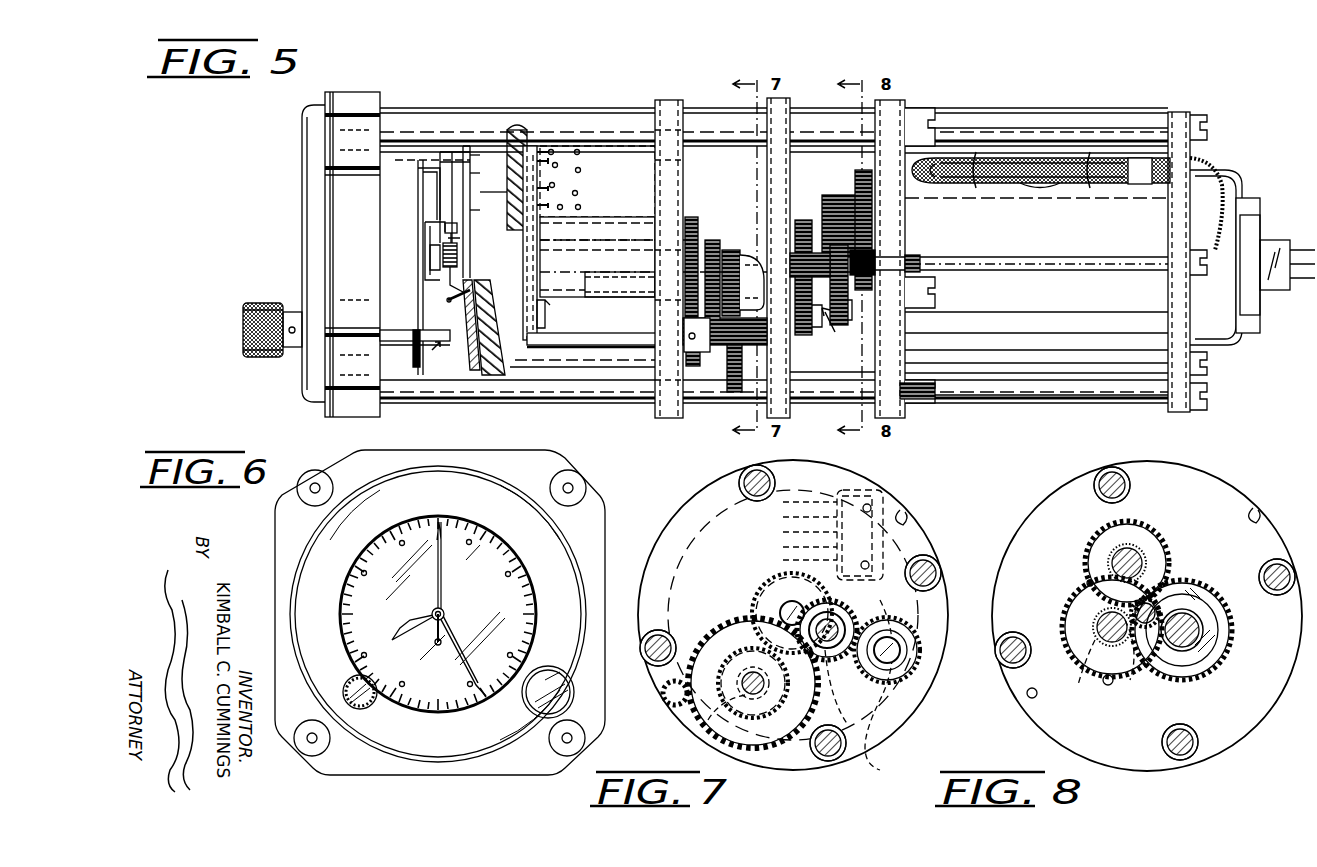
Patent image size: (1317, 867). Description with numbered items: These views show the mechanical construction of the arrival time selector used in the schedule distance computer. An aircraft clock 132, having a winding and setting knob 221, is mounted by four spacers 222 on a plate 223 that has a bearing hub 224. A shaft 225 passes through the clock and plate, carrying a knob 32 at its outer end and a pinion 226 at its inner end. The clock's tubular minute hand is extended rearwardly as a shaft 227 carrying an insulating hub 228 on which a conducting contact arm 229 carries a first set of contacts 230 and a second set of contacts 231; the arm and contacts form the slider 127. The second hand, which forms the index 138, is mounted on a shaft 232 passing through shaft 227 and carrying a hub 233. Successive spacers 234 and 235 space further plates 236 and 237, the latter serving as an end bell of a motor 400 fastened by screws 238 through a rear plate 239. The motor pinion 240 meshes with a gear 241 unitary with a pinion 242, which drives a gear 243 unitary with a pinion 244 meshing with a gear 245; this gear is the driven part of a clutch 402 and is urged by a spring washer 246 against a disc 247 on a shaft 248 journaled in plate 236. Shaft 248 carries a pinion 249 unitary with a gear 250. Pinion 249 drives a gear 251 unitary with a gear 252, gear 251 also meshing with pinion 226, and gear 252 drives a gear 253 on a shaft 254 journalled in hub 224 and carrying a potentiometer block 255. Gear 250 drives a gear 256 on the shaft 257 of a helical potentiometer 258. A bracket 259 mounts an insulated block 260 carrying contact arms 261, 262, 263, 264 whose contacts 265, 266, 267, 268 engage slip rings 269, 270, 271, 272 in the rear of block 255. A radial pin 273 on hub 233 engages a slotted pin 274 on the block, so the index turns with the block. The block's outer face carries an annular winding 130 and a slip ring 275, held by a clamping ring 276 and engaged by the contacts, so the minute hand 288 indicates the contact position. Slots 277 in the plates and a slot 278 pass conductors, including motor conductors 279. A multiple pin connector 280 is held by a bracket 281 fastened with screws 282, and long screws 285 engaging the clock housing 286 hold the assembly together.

In FIG. 5, the knob 32 is at (258, 357).
In FIG. 6, the knob 32 is at (535, 712).
In FIG. 5, the slider 127 is at (415, 348).
In FIG. 5, the annular winding 130 is at (470, 370).
In FIG. 5, the aircraft clock 132 is at (302, 192).
In FIG. 6, the aircraft clock 132 is at (325, 538).
In FIG. 6, the index 138 is at (448, 583).
In FIG. 5, the winding and setting knob 221 is at (283, 312).
In FIG. 6, the winding and setting knob 221 is at (365, 710).
In FIG. 5, the spacers 222 is at (493, 114).
In FIG. 5, the plate 223 is at (656, 405).
In FIG. 5, the bearing hub 224 is at (597, 257).
In FIG. 5, the shaft 225 is at (533, 345).
In FIG. 5, the pinion 226 is at (680, 410).
In FIG. 7, the pinion 226 is at (696, 506).
In FIG. 5, the tubular minute hand shaft 227 is at (432, 260).
In FIG. 5, the insulating hub 228 is at (425, 238).
In FIG. 5, the contact arm 229 is at (437, 182).
In FIG. 5, the first set of contacts 230 is at (460, 160).
In FIG. 5, the second set of contacts 231 is at (448, 305).
In FIG. 5, the shaft 232 is at (457, 258).
In FIG. 5, the hub 233 is at (454, 279).
In FIG. 5, the spacers 234 is at (695, 130).
In FIG. 7, the spacers 234 is at (740, 485).
In FIG. 5, the spacers 235 is at (832, 125).
In FIG. 8, the spacers 235 is at (1122, 470).
In FIG. 5, the plate 236 is at (785, 105).
In FIG. 8, the plate 236 is at (1043, 500).
In FIG. 5, the plate 237 is at (895, 412).
In FIG. 5, the screws 238 is at (1018, 118).
In FIG. 5, the rear plate 239 is at (1185, 410).
In FIG. 5, the pinion 240 is at (875, 258).
In FIG. 8, the pinion 240 is at (1158, 600).
In FIG. 5, the gear 241 is at (862, 170).
In FIG. 8, the gear 241 is at (1158, 537).
In FIG. 5, the pinion 242 is at (826, 197).
In FIG. 8, the pinion 242 is at (1108, 548).
In FIG. 5, the gear 243 is at (849, 320).
In FIG. 8, the gear 243 is at (1068, 598).
In FIG. 5, the pinion 244 is at (792, 258).
In FIG. 8, the pinion 244 is at (1095, 642).
In FIG. 5, the gear 245 is at (826, 325).
In FIG. 8, the gear 245 is at (1205, 672).
In FIG. 5, the spring washer 246 is at (815, 330).
In FIG. 5, the disc 247 is at (798, 220).
In FIG. 5, the shaft 248 is at (762, 250).
In FIG. 8, the shaft 248 is at (1188, 612).
In FIG. 5, the pinion 249 is at (726, 250).
In FIG. 7, the pinion 249 is at (845, 722).
In FIG. 5, the gear 250 is at (710, 240).
In FIG. 7, the gear 250 is at (850, 610).
In FIG. 5, the gear 251 is at (735, 392).
In FIG. 7, the gear 251 is at (757, 750).
In FIG. 5, the gear 252 is at (695, 366).
In FIG. 7, the gear 252 is at (708, 722).
In FIG. 5, the gear 253 is at (690, 217).
In FIG. 7, the gear 253 is at (755, 598).
In FIG. 5, the shaft 254 is at (548, 330).
In FIG. 7, the shaft 254 is at (783, 605).
In FIG. 5, the potentiometer block 255 is at (512, 243).
In FIG. 5, the gear 256 is at (655, 313).
In FIG. 7, the gear 256 is at (912, 665).
In FIG. 7, the shaft 257 is at (888, 664).
In FIG. 5, the helical potentiometer 258 is at (592, 347).
In FIG. 7, the bracket 259 is at (878, 498).
In FIG. 5, the insulated block 260 is at (596, 181).
In FIG. 7, the insulated block 260 is at (850, 490).
In FIG. 7, the contact arm 261 is at (790, 513).
In FIG. 7, the contact arm 262 is at (790, 528).
In FIG. 7, the contact arm 263 is at (780, 548).
In FIG. 7, the contact arm 264 is at (792, 596).
In FIG. 5, the contact 265 is at (525, 135).
In FIG. 5, the contact 266 is at (548, 165).
In FIG. 5, the contact 267 is at (550, 190).
In FIG. 5, the contact 268 is at (550, 208).
In FIG. 5, the slip ring 269 is at (488, 154).
In FIG. 5, the slip ring 270 is at (488, 172).
In FIG. 5, the slip ring 271 is at (490, 191).
In FIG. 5, the slip ring 272 is at (488, 209).
In FIG. 5, the radial pin 273 is at (460, 240).
In FIG. 5, the axially extending pin 274 is at (457, 228).
In FIG. 5, the slip ring 275 is at (478, 293).
In FIG. 5, the clamping ring 276 is at (478, 360).
In FIG. 7, the slots 277 is at (908, 520).
In FIG. 8, the slots 277 is at (1260, 516).
In FIG. 5, the slot 278 is at (1155, 185).
In FIG. 5, the motor conductors 279 is at (1078, 183).
In FIG. 5, the multiple pin connector 280 is at (1275, 290).
In FIG. 5, the bracket 281 is at (1242, 340).
In FIG. 5, the screws 282 is at (1207, 165).
In FIG. 5, the long screws 285 is at (930, 118).
In FIG. 7, the long screws 285 is at (770, 482).
In FIG. 8, the long screws 285 is at (1100, 475).
In FIG. 5, the clock housing 286 is at (380, 405).
In FIG. 6, the clock housing 286 is at (365, 772).
In FIG. 6, the minute hand 288 is at (470, 652).
In FIG. 5, the motor 400 is at (1045, 355).
In FIG. 5, the clutch 402 is at (843, 335).